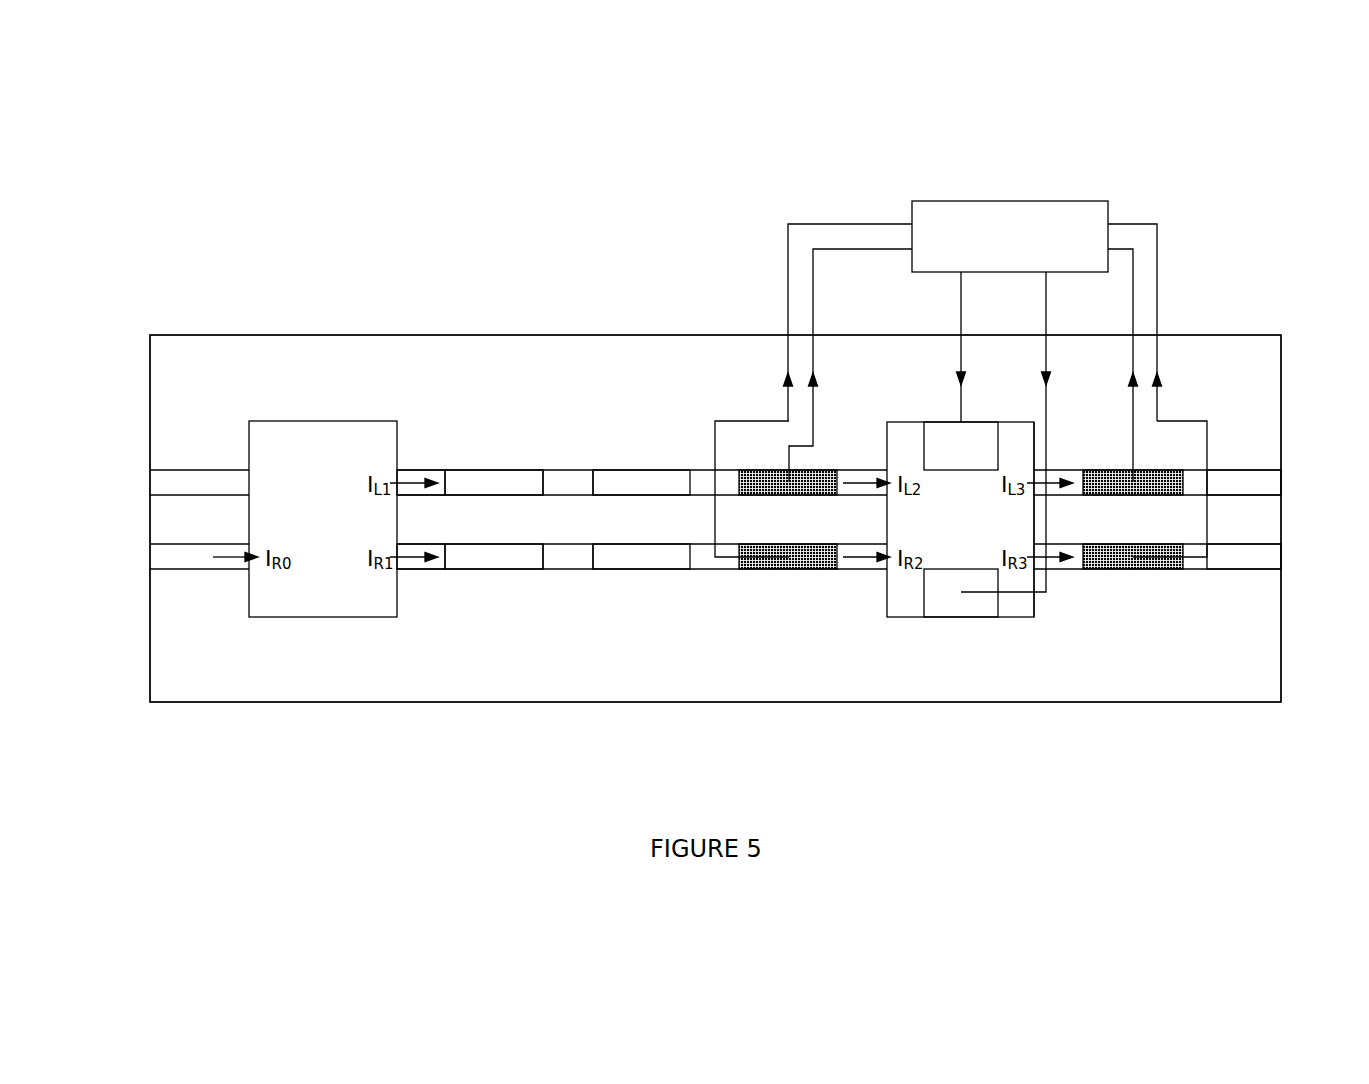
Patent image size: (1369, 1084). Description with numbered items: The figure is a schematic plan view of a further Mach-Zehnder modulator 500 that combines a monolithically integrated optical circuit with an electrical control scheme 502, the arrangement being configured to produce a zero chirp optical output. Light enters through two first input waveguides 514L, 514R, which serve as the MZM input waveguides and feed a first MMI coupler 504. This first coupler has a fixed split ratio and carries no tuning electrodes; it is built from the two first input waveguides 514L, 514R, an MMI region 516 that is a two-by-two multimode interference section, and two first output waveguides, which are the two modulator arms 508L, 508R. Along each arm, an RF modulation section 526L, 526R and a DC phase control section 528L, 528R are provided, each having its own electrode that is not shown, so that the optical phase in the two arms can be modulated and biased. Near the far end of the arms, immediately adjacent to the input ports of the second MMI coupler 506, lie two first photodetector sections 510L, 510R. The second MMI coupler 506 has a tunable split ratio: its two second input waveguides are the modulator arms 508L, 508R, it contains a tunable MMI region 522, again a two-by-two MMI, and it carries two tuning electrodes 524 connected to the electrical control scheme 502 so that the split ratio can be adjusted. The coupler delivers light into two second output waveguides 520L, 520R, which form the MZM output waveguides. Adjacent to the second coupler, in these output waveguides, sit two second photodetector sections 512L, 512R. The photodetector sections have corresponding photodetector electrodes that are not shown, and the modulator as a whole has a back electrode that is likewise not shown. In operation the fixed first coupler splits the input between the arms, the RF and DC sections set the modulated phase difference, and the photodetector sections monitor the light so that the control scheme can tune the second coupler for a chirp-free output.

The Mach-Zehnder modulator 500 is at (138, 250).
The electrical control scheme 502 is at (973, 396).
The first MMI coupler 504 is at (224, 665).
The second MMI coupler 506 is at (1010, 642).
The modulator arm 508L is at (420, 469).
The modulator arm 508R is at (419, 569).
The first photodetector section 510L is at (753, 469).
The first photodetector section 510R is at (753, 570).
The second photodetector section 512L is at (1168, 470).
The second photodetector section 512R is at (1168, 569).
The first input waveguide 514L is at (160, 469).
The first input waveguide 514R is at (162, 569).
The MMI region 516 is at (249, 435).
The second output waveguide 520L is at (1268, 469).
The second output waveguide 520R is at (1268, 570).
The tunable MMI region 522 is at (1034, 443).
The tuning electrode 524 is at (985, 457).
The RF modulation section 526L is at (492, 469).
The RF modulation section 526R is at (495, 570).
The DC phase control section 528L is at (642, 469).
The DC phase control section 528R is at (631, 570).